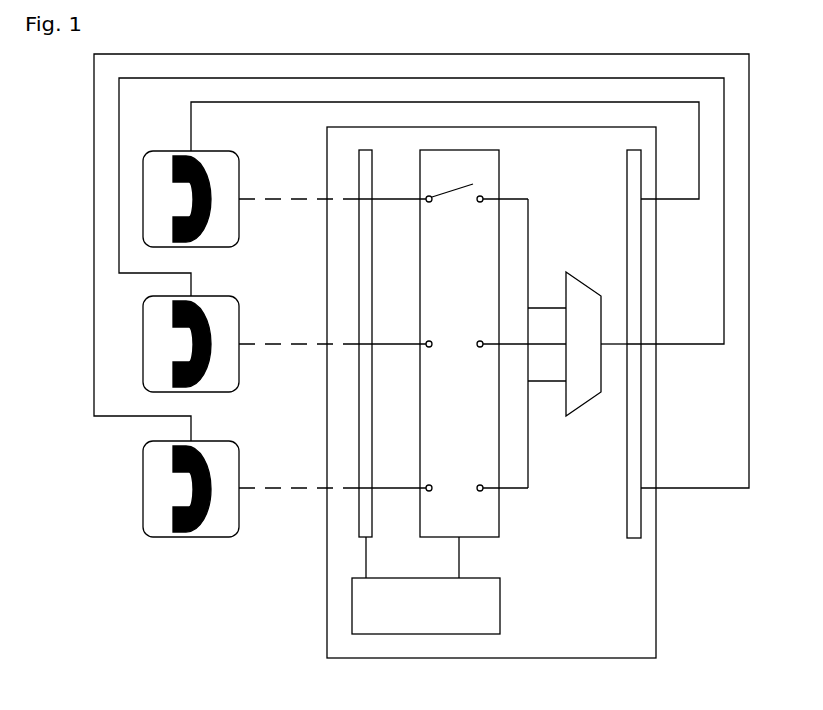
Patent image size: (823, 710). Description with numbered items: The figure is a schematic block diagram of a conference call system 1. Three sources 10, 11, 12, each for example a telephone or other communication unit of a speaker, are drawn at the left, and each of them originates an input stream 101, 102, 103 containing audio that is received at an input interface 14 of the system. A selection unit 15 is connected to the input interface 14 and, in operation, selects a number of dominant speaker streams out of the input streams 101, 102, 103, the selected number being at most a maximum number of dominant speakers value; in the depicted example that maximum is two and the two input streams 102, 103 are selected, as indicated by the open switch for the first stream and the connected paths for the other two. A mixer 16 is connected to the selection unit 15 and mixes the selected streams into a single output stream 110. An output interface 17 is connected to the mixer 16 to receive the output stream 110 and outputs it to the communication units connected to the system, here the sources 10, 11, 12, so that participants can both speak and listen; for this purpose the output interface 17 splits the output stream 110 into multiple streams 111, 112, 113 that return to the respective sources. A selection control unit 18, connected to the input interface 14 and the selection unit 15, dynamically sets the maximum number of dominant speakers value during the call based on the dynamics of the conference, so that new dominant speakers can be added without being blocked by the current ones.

The conference call system 1 is at (651, 651).
The source 10 is at (229, 173).
The source 11 is at (229, 313).
The source 12 is at (229, 453).
The input stream 101 is at (266, 199).
The input stream 102 is at (266, 344).
The input stream 103 is at (266, 488).
The input interface 14 is at (365, 327).
The selection unit 15 is at (471, 255).
The mixer 16 is at (577, 322).
The output interface 17 is at (636, 230).
The selection control unit 18 is at (438, 616).
The output stream 110 is at (615, 345).
The output stream split 111 is at (700, 127).
The output stream split 112 is at (713, 344).
The output stream split 113 is at (713, 488).